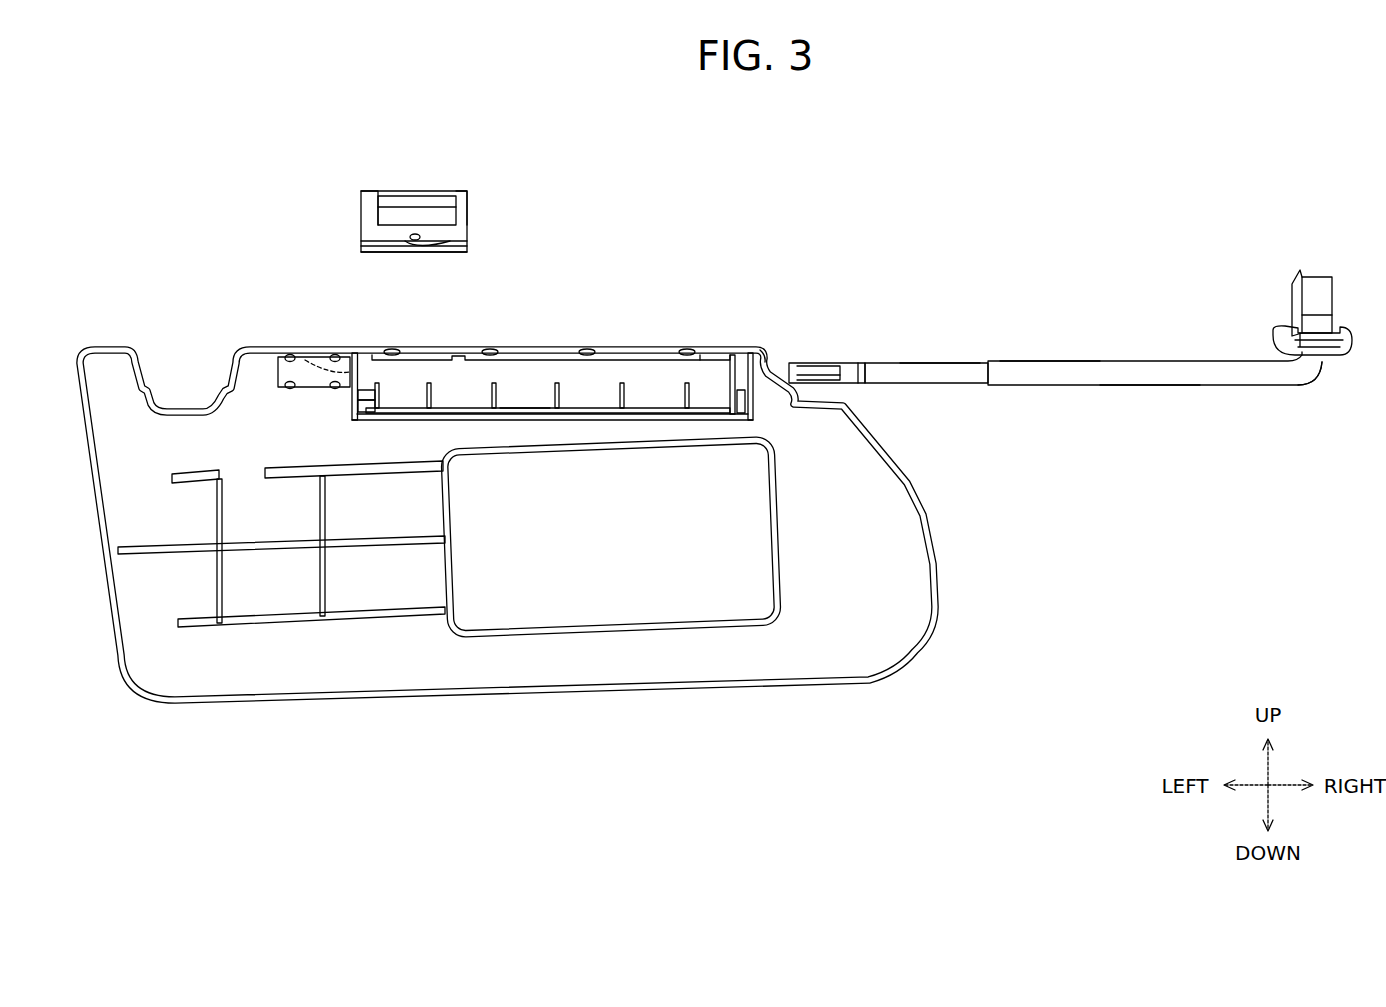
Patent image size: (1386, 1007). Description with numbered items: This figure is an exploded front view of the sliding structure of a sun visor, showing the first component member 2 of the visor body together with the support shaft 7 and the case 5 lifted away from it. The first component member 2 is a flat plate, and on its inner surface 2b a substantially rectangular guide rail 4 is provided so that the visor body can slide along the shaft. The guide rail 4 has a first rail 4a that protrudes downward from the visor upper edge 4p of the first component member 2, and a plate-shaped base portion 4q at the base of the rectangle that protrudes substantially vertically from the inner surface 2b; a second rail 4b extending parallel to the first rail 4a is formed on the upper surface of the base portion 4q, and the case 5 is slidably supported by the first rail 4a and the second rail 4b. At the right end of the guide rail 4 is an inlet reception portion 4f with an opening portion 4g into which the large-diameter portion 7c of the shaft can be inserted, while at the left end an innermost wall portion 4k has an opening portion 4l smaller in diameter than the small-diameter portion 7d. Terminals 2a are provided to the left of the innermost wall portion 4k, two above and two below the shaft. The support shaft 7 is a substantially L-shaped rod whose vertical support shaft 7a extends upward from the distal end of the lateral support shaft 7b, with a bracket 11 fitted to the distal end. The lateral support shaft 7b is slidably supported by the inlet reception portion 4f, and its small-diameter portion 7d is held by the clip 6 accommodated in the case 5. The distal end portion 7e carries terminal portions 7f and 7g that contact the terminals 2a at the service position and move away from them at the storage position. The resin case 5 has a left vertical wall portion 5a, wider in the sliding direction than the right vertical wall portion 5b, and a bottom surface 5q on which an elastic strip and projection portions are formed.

The first component member 2 is at (952, 610).
The terminals 2a is at (290, 355).
The inner surface 2b is at (350, 655).
The guide rail 4 is at (643, 345).
The first rail 4a is at (705, 350).
The second rail 4b is at (523, 410).
The visor upper edge 4p is at (523, 352).
The inlet reception portion 4f is at (742, 362).
The opening portion 4g is at (762, 350).
The innermost wall portion 4k is at (352, 358).
The opening portion 4l is at (301, 352).
The base portion 4q is at (413, 422).
The case 5 is at (372, 189).
The left vertical wall portion 5a is at (368, 203).
The right vertical wall portion 5b is at (460, 192).
The bottom surface 5q is at (390, 253).
The clip 6 is at (397, 191).
The support shaft 7 is at (1266, 420).
The vertical support shaft 7a is at (1331, 369).
The lateral support shaft 7b is at (1129, 389).
The large-diameter portion 7c is at (1075, 373).
The small-diameter portion 7d is at (940, 362).
The distal end portion 7e is at (862, 362).
The terminal portion 7f is at (815, 362).
The terminal portion 7g is at (840, 372).
The bracket 11 is at (1347, 332).